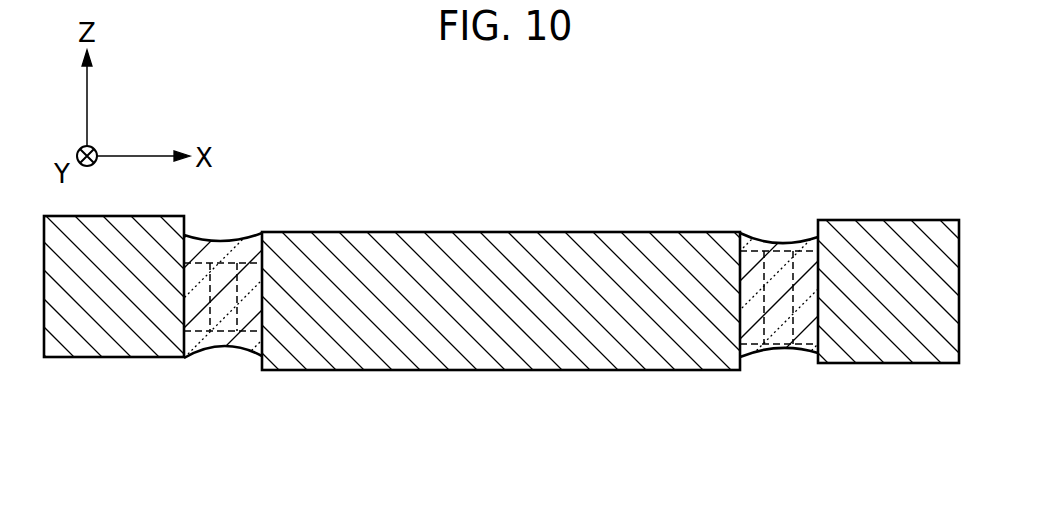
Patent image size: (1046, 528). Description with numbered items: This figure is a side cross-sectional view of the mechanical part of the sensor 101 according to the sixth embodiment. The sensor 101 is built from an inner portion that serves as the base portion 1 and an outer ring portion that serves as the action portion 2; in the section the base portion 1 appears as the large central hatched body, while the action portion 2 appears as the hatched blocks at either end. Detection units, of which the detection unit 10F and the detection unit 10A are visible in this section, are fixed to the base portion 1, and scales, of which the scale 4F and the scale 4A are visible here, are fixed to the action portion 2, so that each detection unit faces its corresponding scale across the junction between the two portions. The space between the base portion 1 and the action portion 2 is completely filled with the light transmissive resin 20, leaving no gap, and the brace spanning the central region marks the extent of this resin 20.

The sensor 101 is at (903, 62).
The base portion 1 is at (515, 370).
The action portion 2 is at (900, 228).
The light transmissive resin 20 is at (226, 243).
The scale 4F is at (200, 325).
The scale 4A is at (810, 338).
The detection unit 10F is at (248, 325).
The detection unit 10A is at (755, 342).